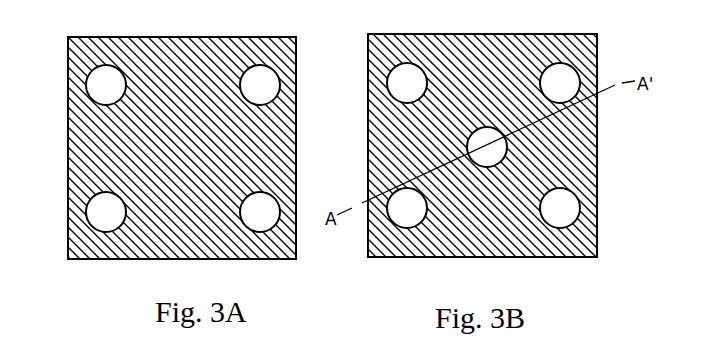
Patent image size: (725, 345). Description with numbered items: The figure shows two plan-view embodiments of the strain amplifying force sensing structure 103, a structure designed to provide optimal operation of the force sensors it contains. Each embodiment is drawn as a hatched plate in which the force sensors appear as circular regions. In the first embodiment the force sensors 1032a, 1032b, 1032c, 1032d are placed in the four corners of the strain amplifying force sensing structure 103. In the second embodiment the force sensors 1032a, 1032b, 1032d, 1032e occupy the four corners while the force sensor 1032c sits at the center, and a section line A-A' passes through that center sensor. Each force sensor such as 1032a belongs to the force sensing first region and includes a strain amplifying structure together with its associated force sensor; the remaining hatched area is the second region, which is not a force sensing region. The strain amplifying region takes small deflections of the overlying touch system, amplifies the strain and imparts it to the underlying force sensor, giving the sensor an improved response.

In FIG. 3A, the strain amplifying force sensing structure 103 is at (143, 37).
In FIG. 3B, the strain amplifying force sensing structure 103 is at (457, 34).
In FIG. 3A, the force sensor 1032a is at (268, 78).
In FIG. 3B, the force sensor 1032a is at (397, 80).
In FIG. 3A, the force sensor 1032b is at (259, 211).
In FIG. 3B, the force sensor 1032b is at (570, 80).
In FIG. 3A, the force sensor 1032c is at (93, 83).
In FIG. 3B, the force sensor 1032c is at (487, 148).
In FIG. 3A, the force sensor 1032d is at (95, 205).
In FIG. 3B, the force sensor 1032d is at (560, 208).
In FIG. 3B, the force sensor 1032e is at (403, 205).